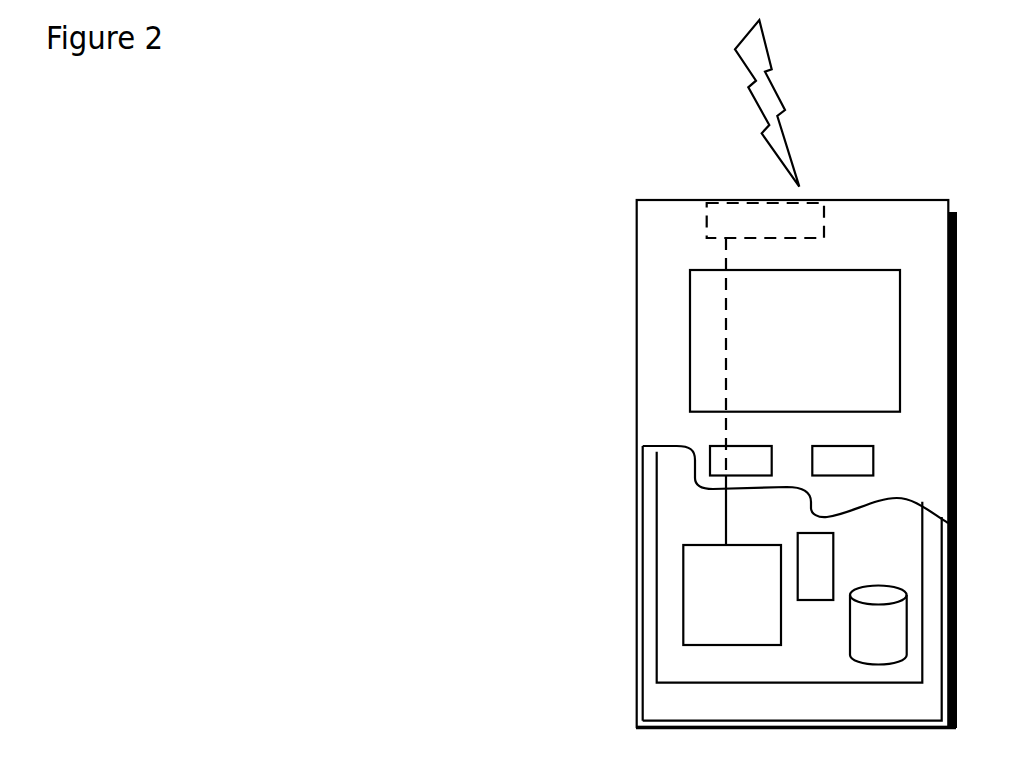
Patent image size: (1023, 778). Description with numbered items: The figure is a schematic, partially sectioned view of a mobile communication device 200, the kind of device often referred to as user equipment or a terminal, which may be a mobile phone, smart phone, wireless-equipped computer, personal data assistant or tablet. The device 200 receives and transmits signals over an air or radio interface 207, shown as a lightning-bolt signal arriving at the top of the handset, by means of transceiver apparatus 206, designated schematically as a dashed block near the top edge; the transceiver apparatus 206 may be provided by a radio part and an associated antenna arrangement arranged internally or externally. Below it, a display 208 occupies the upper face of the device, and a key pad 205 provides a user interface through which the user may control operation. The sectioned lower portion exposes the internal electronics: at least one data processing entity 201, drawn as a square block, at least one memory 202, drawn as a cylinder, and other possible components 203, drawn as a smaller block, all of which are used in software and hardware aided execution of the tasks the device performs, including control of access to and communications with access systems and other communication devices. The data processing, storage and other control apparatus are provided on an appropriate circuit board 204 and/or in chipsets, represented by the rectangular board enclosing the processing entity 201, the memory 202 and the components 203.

The communication device 200 is at (637, 244).
The data processing entity 201 is at (690, 578).
The memory 202 is at (872, 637).
The other possible components 203 is at (815, 550).
The circuit board 204 is at (683, 665).
The key pad 205 is at (715, 462).
The transceiver apparatus 206 is at (813, 216).
The air or radio interface 207 is at (803, 124).
The display 208 is at (707, 327).